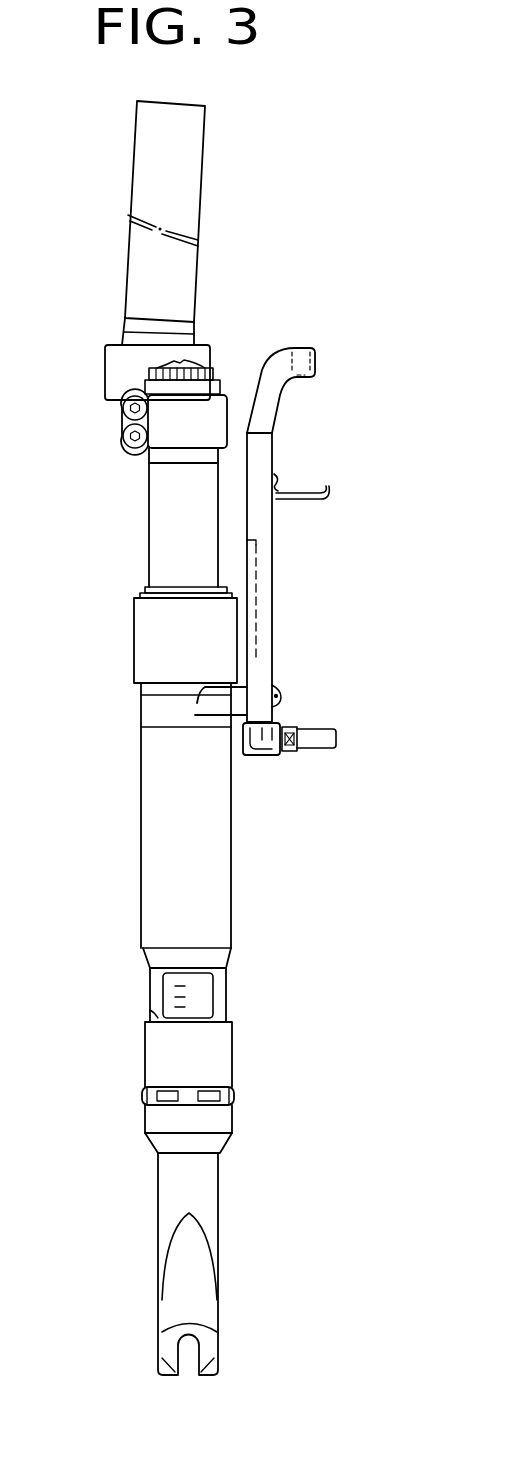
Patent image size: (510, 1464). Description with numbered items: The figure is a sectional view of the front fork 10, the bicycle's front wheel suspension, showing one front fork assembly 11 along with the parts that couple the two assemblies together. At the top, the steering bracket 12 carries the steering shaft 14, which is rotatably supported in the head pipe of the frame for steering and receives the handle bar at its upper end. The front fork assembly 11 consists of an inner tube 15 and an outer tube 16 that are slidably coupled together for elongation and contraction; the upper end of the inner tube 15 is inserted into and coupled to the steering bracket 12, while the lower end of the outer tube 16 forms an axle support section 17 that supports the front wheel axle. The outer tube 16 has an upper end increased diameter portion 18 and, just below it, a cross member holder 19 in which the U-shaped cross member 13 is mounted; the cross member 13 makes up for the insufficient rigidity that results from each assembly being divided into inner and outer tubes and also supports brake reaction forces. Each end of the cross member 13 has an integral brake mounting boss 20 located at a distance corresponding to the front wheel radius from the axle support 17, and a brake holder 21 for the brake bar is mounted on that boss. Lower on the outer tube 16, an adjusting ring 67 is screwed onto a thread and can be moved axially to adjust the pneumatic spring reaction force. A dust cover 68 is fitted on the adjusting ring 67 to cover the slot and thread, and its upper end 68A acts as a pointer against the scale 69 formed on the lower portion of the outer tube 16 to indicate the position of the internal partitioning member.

The front fork 10 is at (341, 346).
The front fork assembly 11 is at (140, 500).
The steering bracket 12 is at (113, 378).
The cross member 13 is at (273, 558).
The steering shaft 14 is at (198, 211).
The inner tube 15 is at (162, 535).
The outer tube 16 is at (143, 900).
The axle support section 17 is at (192, 1345).
The upper end increased diameter portion 18 is at (135, 615).
The cross member holder 19 is at (233, 693).
The brake mounting boss 20 is at (258, 752).
The brake holder 21 is at (315, 752).
The adjusting ring 67 is at (143, 1097).
The dust cover 68 is at (150, 1068).
The upper end of the dust cover 68A is at (160, 1015).
The scale 69 is at (222, 994).